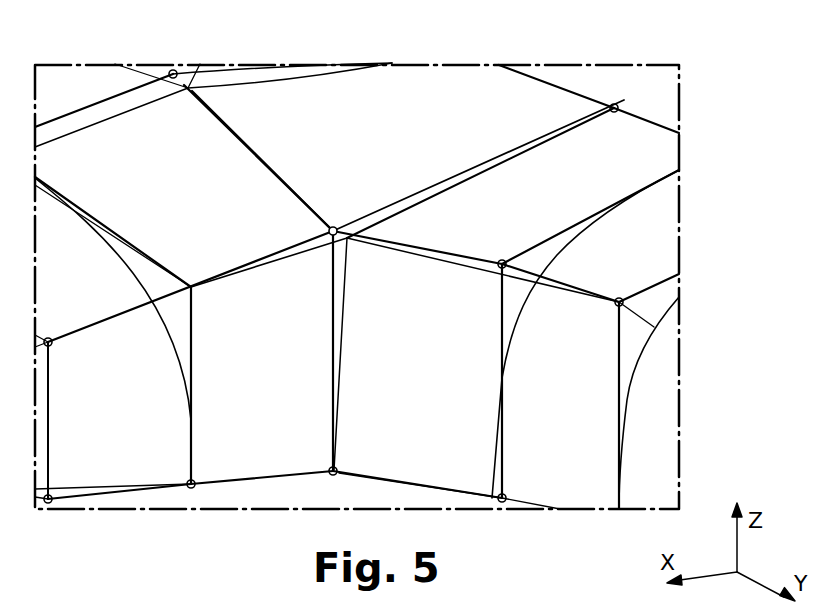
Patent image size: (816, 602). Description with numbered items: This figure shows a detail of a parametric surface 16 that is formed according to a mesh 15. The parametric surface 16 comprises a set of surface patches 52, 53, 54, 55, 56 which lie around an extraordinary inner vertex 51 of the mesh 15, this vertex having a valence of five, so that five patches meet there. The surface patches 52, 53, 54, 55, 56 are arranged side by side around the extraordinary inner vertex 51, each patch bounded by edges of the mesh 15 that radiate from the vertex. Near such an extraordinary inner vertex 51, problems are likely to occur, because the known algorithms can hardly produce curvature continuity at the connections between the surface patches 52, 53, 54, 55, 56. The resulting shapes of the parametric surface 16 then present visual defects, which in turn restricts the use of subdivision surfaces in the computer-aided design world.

The mesh 15 is at (191, 322).
The parametric surface 16 is at (339, 139).
The extraordinary inner vertex 51 is at (328, 230).
The surface patch 52 is at (397, 150).
The surface patch 53 is at (513, 334).
The surface patch 54 is at (417, 364).
The surface patch 55 is at (184, 338).
The surface patch 56 is at (191, 208).